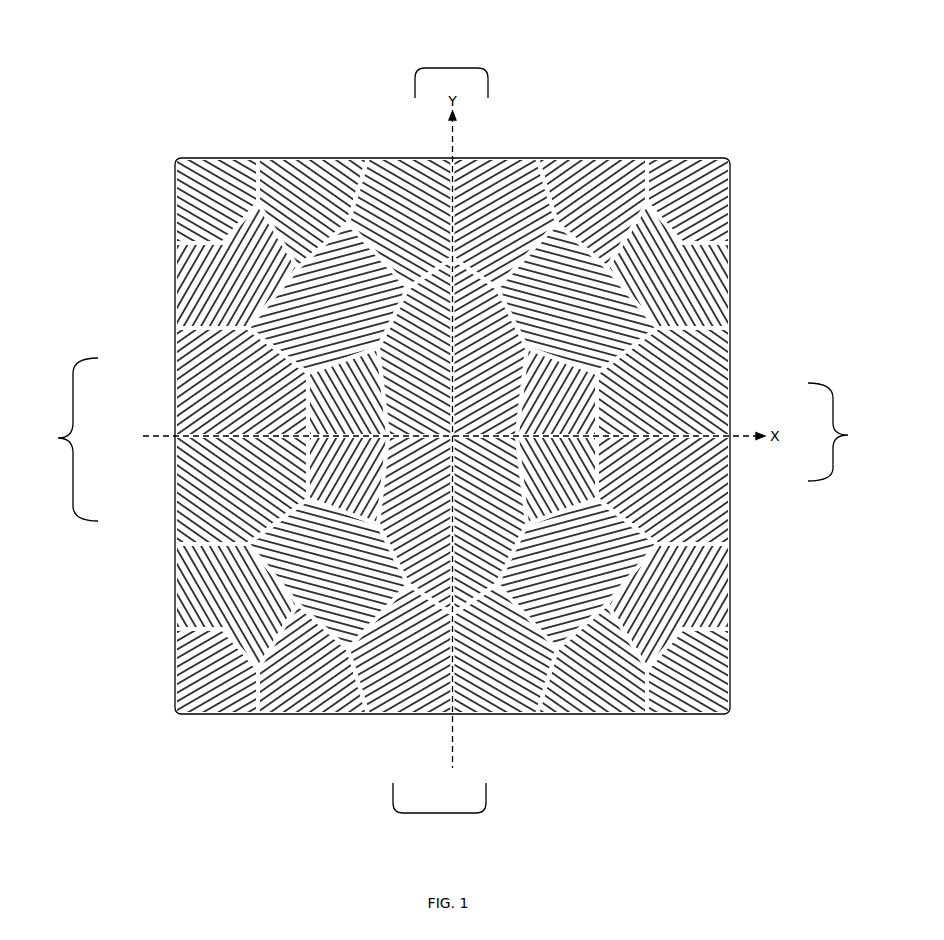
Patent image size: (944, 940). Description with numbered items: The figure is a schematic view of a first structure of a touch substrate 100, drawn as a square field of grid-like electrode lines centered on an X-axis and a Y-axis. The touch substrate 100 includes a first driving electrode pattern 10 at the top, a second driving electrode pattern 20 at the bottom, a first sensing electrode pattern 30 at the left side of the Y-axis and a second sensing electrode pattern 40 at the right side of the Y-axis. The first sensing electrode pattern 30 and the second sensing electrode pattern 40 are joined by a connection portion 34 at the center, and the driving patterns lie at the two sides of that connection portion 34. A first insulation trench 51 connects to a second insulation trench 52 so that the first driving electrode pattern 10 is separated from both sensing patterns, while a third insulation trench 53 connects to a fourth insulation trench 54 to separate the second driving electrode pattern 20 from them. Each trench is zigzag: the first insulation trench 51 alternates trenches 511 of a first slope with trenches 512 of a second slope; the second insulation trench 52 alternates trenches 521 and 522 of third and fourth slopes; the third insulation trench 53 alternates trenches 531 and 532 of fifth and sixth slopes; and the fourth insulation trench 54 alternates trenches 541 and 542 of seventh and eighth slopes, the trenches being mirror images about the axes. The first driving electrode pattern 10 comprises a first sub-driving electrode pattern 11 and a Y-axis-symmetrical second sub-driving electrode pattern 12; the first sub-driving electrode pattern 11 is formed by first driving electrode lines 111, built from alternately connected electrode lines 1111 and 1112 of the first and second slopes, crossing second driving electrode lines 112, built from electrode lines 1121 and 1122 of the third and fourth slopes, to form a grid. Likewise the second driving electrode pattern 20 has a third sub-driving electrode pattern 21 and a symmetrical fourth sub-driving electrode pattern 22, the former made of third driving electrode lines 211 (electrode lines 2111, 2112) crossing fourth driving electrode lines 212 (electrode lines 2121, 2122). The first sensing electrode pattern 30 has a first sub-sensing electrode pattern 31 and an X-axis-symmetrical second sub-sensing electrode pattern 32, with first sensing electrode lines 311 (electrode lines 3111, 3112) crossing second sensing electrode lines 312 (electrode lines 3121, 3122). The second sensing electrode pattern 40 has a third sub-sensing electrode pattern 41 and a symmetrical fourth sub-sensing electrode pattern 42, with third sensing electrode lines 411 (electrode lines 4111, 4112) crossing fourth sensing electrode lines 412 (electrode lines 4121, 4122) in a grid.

The touch substrate 100 is at (453, 373).
The first driving electrode pattern 10 is at (443, 60).
The first sub-driving electrode pattern 11 is at (411, 146).
The second sub-driving electrode pattern 12 is at (477, 146).
The second driving electrode pattern 20 is at (445, 805).
The third sub-driving electrode pattern 21 is at (474, 710).
The fourth sub-driving electrode pattern 22 is at (383, 710).
The first sensing electrode pattern 30 is at (50, 430).
The first sub-sensing electrode pattern 31 is at (163, 350).
The second sub-sensing electrode pattern 32 is at (163, 514).
The connection portion 34 is at (458, 416).
The second sensing electrode pattern 40 is at (840, 427).
The third sub-sensing electrode pattern 41 is at (726, 375).
The fourth sub-sensing electrode pattern 42 is at (726, 472).
The first insulation trench 51 is at (166, 160).
The trenches having a first slope 511 is at (168, 151).
The trenches having a second slope 512 is at (205, 160).
The second insulation trench 52 is at (727, 162).
The trenches having a third slope 521 is at (725, 150).
The trenches having a fourth slope 522 is at (724, 178).
The third insulation trench 53 is at (724, 698).
The trenches having a fifth slope 531 is at (724, 682).
The trenches having a sixth slope 532 is at (710, 666).
The fourth insulation trench 54 is at (166, 698).
The trenches having a seventh slope 541 is at (166, 684).
The trenches having an eighth slope 542 is at (180, 683).
The first driving electrode lines 111 is at (210, 158).
The electrode lines having the first slope 1111 is at (258, 176).
The electrode lines having the second slope 1112 is at (226, 158).
The second driving electrode lines 112 is at (245, 165).
The electrode lines having the third slope 1121 is at (312, 160).
The electrode lines having the fourth slope 1122 is at (320, 165).
The third driving electrode lines 211 is at (677, 690).
The electrode lines having the fifth slope 2111 is at (620, 692).
The electrode lines having the sixth slope 2112 is at (603, 633).
The fourth driving electrode lines 212 is at (643, 708).
The electrode lines having the seventh slope 2121 is at (492, 693).
The electrode lines having the eighth slope 2122 is at (532, 660).
The first sensing electrode lines 311 is at (200, 198).
The electrode lines having the first slope 3111 is at (195, 253).
The electrode lines having the second slope 3112 is at (190, 283).
The second sensing electrode lines 312 is at (200, 228).
The electrode lines having the seventh slope 3121 is at (258, 373).
The electrode lines having the eighth slope 3122 is at (268, 340).
The third sensing electrode lines 411 is at (724, 198).
The electrode lines having the third slope 4111 is at (705, 263).
The electrode lines having the fourth slope 4112 is at (683, 292).
The fourth sensing electrode lines 412 is at (695, 226).
The electrode lines having the fifth slope 4121 is at (668, 328).
The electrode lines having the sixth slope 4122 is at (712, 363).